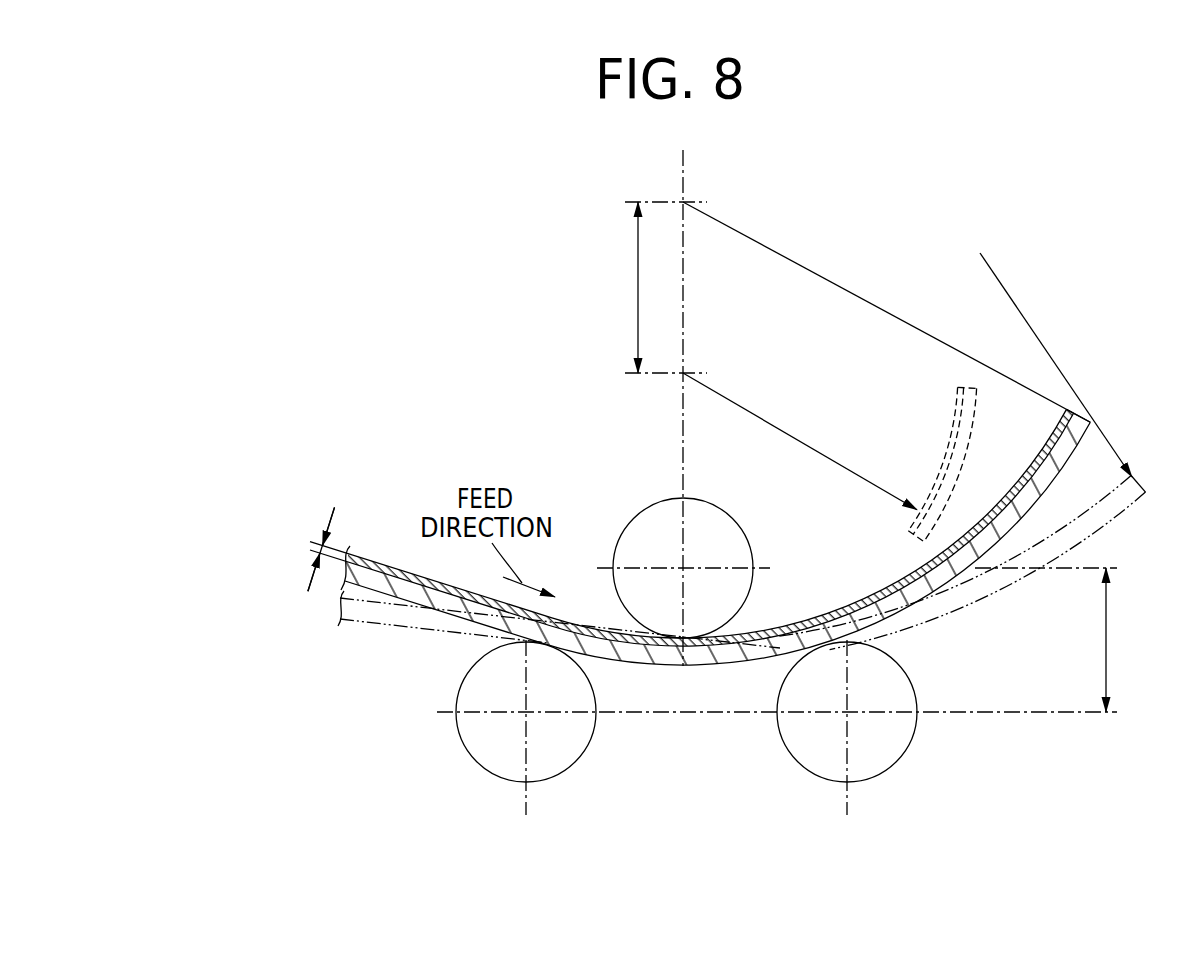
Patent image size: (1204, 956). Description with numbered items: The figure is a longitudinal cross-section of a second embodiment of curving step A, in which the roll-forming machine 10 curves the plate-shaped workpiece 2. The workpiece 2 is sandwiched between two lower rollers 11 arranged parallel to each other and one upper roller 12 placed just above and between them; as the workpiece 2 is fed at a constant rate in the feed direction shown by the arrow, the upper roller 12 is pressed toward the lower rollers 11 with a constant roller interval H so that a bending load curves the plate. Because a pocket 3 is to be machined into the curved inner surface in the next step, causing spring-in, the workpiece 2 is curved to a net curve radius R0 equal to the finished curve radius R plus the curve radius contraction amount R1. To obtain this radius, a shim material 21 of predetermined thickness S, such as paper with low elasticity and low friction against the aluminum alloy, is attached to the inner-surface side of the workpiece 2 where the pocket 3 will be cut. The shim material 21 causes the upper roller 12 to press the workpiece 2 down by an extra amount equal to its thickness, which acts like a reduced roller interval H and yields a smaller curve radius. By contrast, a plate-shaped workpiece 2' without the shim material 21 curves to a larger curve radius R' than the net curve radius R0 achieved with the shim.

The plate-shaped workpiece 2 is at (708, 545).
The plate-shaped workpiece without shim material 2' is at (979, 563).
The pocket 3 is at (952, 455).
The roll-forming machine 10 is at (643, 641).
The lower rollers 11 is at (472, 759).
The upper roller 12 is at (633, 518).
The shim material 21 is at (384, 564).
The curving step A is at (452, 303).
The thickness of surface layer S is at (316, 543).
The roller interval H is at (1118, 640).
The finished curve radius R is at (800, 441).
The net curve radius R0 is at (886, 312).
The curve radius contraction amount R1 is at (625, 287).
The curve radius without shim material R' is at (1056, 365).